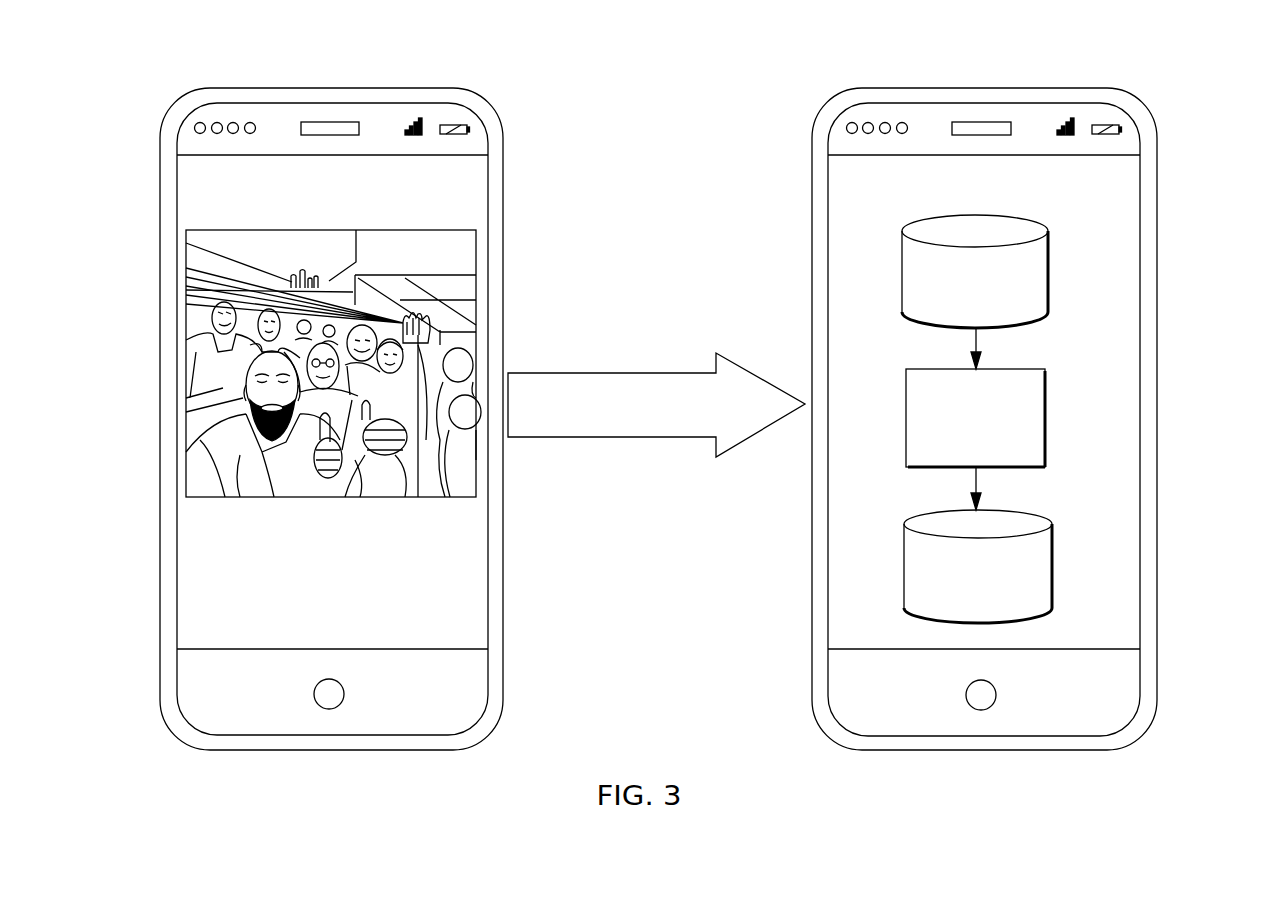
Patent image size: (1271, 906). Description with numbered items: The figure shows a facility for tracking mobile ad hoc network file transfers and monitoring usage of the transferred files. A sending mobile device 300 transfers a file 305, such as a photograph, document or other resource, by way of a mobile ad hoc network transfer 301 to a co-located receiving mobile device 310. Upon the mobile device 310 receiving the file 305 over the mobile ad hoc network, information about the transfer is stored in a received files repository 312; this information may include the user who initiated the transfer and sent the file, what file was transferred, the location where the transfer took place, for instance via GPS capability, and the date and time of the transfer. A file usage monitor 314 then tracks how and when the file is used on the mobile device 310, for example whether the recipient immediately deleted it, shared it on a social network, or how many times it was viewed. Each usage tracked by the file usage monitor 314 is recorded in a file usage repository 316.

The mobile device 300 is at (186, 96).
The file 305 is at (187, 319).
The mobile ad hoc network transfer 301 is at (626, 373).
The mobile device 310 is at (1138, 102).
The received files repository 312 is at (1050, 275).
The file usage monitor 314 is at (1047, 412).
The file usage repository 316 is at (1054, 565).